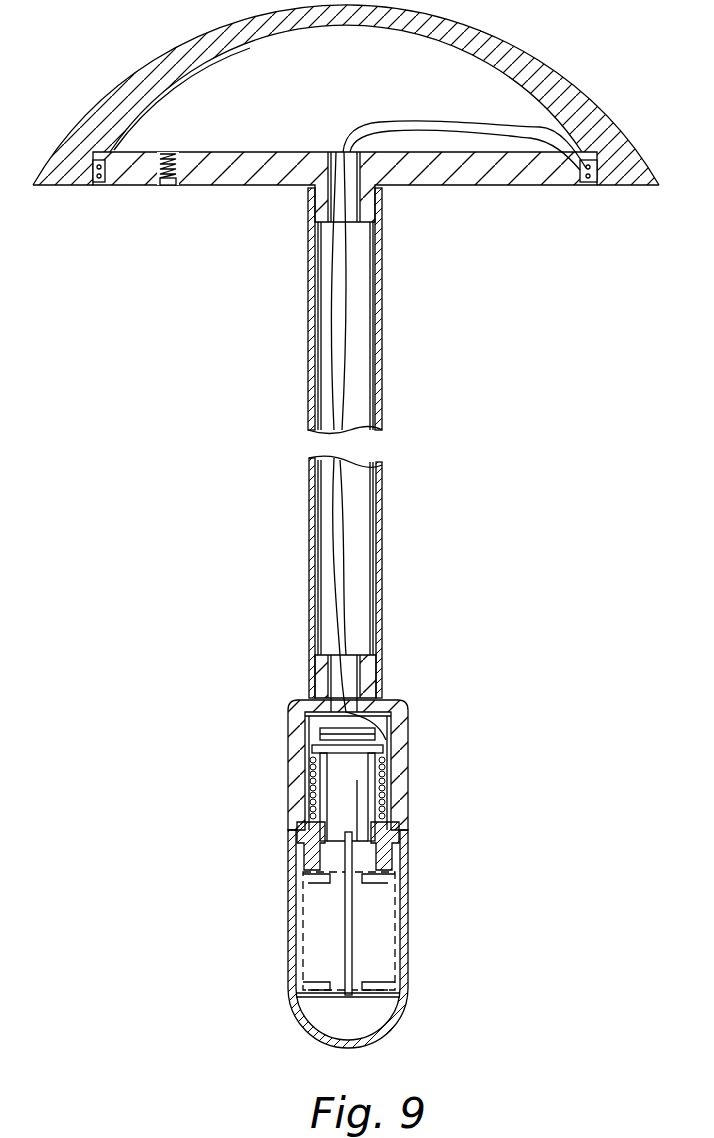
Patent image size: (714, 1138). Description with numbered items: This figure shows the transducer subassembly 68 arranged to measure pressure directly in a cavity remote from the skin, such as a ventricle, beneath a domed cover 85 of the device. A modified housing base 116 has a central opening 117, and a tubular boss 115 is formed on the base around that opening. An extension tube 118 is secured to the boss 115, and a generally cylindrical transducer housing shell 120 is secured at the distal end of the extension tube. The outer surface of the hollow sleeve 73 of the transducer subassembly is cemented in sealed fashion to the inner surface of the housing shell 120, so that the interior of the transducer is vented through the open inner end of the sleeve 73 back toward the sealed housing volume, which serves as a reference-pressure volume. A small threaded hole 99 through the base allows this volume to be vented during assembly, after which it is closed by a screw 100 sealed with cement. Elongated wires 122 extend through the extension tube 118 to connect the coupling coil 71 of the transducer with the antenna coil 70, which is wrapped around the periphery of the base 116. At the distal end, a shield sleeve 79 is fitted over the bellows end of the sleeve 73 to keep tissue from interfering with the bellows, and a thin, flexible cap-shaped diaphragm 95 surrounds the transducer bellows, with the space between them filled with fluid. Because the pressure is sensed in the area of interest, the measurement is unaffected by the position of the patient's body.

The dome cover 85 is at (520, 50).
The threaded hole 99 is at (172, 141).
The screw 100 is at (167, 201).
The central opening 117 is at (339, 150).
The antenna coil 70 is at (592, 164).
The housing base 116 is at (545, 186).
The tubular boss 115 is at (365, 241).
The elongated wires 122 is at (338, 371).
The extension tube 118 is at (384, 401).
The transducer housing shell 120 is at (408, 742).
The coupling coil 71 is at (306, 805).
The hollow sleeve 73 is at (340, 812).
The transducer subassembly 68 is at (322, 920).
The shield sleeve 79 is at (398, 997).
The diaphragm 95 is at (326, 1046).